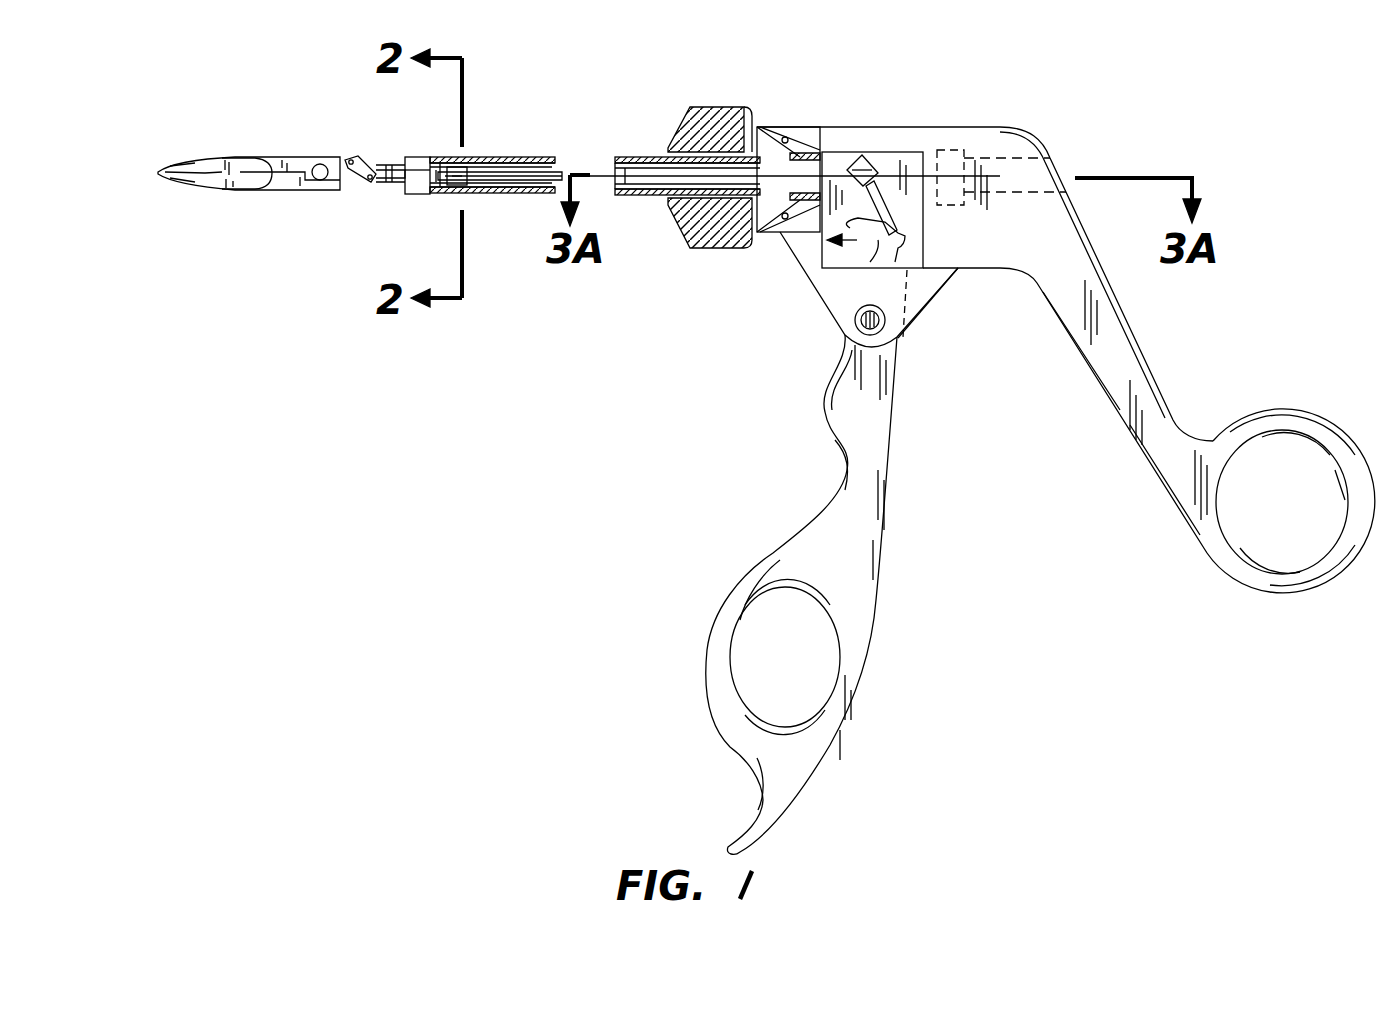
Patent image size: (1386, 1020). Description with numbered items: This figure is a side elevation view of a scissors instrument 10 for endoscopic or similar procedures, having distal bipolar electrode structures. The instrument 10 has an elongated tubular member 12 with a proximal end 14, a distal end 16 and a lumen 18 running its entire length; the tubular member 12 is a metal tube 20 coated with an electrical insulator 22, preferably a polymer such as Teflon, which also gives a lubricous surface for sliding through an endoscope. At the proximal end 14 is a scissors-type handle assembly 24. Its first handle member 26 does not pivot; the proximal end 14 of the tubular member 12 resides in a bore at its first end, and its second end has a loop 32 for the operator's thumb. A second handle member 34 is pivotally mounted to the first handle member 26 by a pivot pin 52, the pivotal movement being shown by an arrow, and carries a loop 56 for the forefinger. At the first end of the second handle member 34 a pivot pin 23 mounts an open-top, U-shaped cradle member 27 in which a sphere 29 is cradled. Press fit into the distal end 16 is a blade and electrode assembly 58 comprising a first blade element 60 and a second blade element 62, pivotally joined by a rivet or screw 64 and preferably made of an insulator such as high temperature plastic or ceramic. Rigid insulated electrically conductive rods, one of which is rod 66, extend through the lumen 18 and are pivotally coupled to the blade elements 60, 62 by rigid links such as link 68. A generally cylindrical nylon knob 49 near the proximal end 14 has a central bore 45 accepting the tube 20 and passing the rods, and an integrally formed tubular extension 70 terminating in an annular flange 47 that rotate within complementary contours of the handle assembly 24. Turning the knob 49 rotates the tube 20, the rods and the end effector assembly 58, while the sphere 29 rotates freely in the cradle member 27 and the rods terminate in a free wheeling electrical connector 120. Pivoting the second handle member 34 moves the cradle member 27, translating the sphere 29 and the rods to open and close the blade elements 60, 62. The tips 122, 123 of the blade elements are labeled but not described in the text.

The scissors instrument 10 is at (1100, 124).
The tubular member 12 is at (636, 195).
The proximal end 14 is at (620, 158).
The distal end 16 is at (425, 157).
The lumen 18 is at (556, 183).
The metal tube 20 is at (557, 170).
The electrical insulator 22 is at (487, 157).
The pivot pin 23 is at (913, 277).
The handle assembly 24 is at (1170, 350).
The first handle member 26 is at (1160, 478).
The cradle member 27 is at (878, 165).
The sphere 29 is at (862, 150).
The loop 32 is at (1250, 508).
The second handle member 34 is at (835, 455).
The bore 45 is at (778, 200).
The annular flange 47 is at (822, 150).
The knob 49 is at (712, 107).
The pivot pin 52 is at (855, 320).
The loop 56 is at (760, 650).
The blade and electrode assembly 58 is at (318, 112).
The first blade element 60 is at (222, 190).
The second blade element 62 is at (233, 155).
The rivet or screw 64 is at (318, 165).
The electrically conductive rod 66 is at (380, 185).
The rigid link 68 is at (355, 158).
The tubular extension 70 is at (806, 152).
The electrical connector 120 is at (950, 148).
The lower jaw tip 122 is at (185, 183).
The upper jaw tip 123 is at (182, 164).